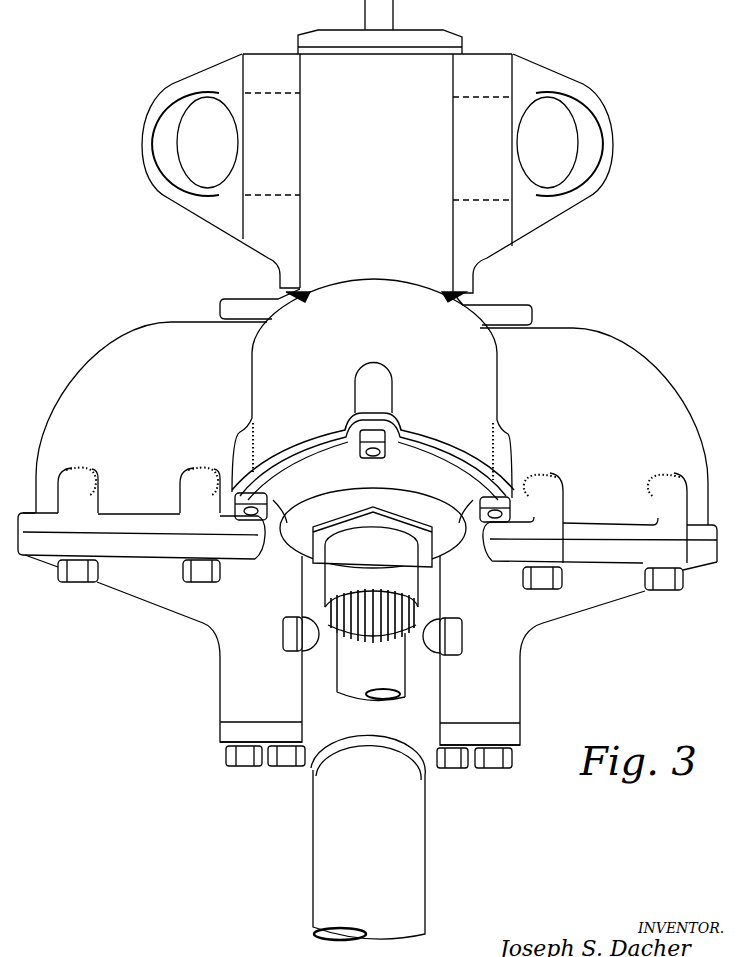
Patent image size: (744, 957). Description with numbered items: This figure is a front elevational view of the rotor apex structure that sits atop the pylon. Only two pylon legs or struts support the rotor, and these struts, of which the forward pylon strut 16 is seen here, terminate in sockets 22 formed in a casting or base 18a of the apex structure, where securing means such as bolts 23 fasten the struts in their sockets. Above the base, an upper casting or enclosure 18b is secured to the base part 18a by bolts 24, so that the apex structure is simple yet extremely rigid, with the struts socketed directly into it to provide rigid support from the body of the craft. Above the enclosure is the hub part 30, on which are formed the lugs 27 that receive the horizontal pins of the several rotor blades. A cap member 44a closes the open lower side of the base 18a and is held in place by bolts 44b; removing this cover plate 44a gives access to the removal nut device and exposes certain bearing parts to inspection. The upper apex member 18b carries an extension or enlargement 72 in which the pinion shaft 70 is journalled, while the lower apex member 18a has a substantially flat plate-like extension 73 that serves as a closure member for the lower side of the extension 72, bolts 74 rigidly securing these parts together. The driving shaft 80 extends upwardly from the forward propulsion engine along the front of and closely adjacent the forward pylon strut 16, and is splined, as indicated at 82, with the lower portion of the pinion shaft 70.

The forward pylon strut 16 is at (402, 893).
The base of the apex structure 18a is at (533, 620).
The upper casting or enclosure 18b is at (372, 426).
The sockets 22 is at (416, 726).
The bolts 23 is at (283, 633).
The bolts 24 is at (80, 575).
The lugs 27 is at (218, 83).
The hub part 30 is at (378, 173).
The cap member 44a is at (227, 735).
The bolts 44b is at (243, 760).
The pinion shaft 70 is at (400, 566).
The extension or enlargement 72 is at (372, 388).
The plate-like extension 73 is at (308, 472).
The bolts 74 is at (386, 452).
The driving shaft 80 is at (372, 604).
The spline 82 is at (413, 618).